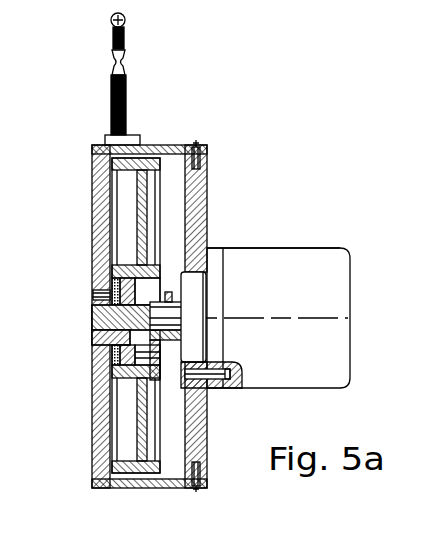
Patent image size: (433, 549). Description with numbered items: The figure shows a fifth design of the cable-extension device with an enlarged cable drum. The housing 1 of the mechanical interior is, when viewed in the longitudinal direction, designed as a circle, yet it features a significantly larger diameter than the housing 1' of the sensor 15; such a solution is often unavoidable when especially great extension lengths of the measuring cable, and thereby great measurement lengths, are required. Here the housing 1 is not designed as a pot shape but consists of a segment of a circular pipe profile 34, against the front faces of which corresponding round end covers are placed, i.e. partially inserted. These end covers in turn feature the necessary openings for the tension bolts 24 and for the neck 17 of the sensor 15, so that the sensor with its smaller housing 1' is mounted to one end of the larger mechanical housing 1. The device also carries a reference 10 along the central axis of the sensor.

The housing 1 is at (121, 316).
The housing 1' is at (280, 285).
The shaft 10 is at (247, 316).
The sensor 15 is at (275, 221).
The neck 17 is at (188, 344).
The tension bolts 24 is at (95, 333).
The circular pipe profile 34 is at (150, 488).